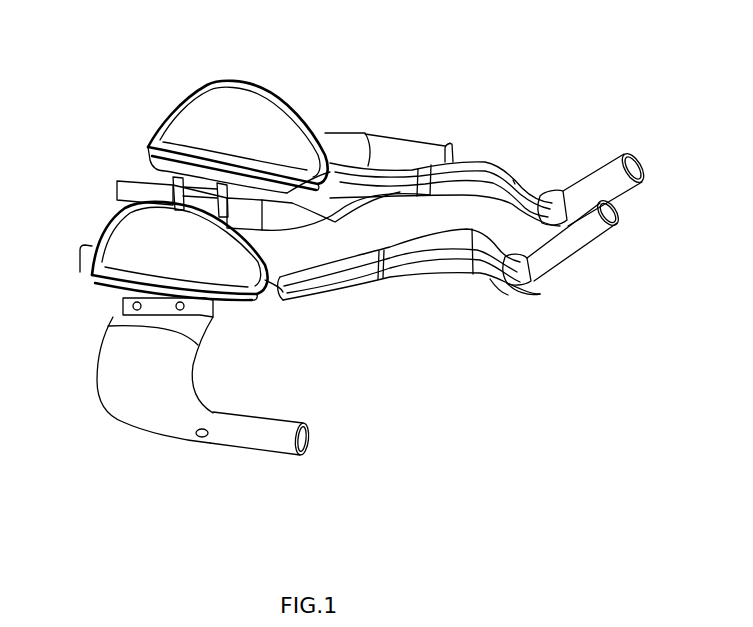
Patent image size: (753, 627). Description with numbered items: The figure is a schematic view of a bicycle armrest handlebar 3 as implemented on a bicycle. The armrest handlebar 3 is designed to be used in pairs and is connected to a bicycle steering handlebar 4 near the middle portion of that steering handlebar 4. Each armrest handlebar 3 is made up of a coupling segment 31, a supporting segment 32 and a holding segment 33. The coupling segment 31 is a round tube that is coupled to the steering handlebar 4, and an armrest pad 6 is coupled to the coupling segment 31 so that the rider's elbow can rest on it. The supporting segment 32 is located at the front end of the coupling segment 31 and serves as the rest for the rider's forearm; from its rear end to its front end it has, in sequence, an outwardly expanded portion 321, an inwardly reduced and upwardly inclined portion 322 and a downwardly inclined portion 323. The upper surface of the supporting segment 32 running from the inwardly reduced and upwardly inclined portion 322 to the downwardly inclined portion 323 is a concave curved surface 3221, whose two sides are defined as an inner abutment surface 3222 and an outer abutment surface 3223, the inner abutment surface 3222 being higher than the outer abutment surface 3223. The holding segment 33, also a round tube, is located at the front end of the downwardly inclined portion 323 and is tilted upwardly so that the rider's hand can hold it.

The bicycle armrest handlebar 3 is at (68, 517).
The bicycle steering handlebar 4 is at (342, 143).
The armrest pad 6 is at (208, 110).
The coupling segment 31 is at (130, 188).
The supporting segment 32 is at (565, 459).
The holding segment 33 is at (618, 188).
The outwardly expanded portion 321 is at (285, 300).
The inwardly reduced and upwardly inclined portion 322 is at (408, 278).
The downwardly inclined portion 323 is at (493, 282).
The concave curved surface 3221 is at (428, 173).
The inner abutment surface 3222 is at (513, 180).
The outer abutment surface 3223 is at (513, 168).